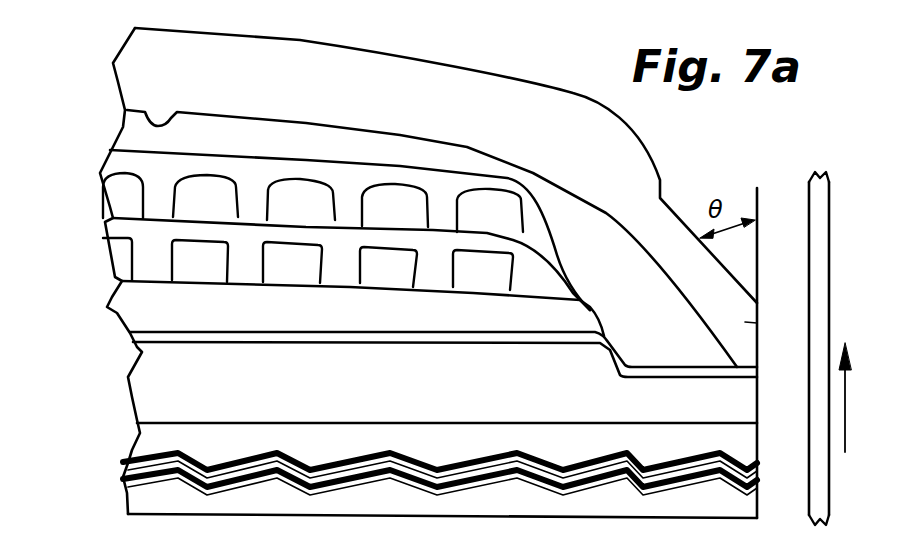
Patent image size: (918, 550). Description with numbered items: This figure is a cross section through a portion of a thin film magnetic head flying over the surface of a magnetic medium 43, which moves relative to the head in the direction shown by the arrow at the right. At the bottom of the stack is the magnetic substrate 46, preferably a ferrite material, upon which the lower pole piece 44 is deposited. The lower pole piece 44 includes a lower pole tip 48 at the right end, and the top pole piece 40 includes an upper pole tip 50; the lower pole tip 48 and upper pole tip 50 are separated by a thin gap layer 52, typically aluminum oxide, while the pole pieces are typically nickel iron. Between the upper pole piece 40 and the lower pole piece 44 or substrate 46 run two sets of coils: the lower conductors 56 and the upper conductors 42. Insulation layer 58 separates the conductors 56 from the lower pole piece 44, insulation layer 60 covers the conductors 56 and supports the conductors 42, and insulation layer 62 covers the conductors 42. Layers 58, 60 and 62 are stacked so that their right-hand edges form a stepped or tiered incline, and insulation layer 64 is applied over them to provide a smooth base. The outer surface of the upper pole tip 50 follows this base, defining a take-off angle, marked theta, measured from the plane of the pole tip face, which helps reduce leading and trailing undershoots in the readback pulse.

The top pole piece 40 is at (137, 77).
The coils 42 is at (293, 187).
The magnetic medium 43 is at (808, 195).
The lower pole piece 44 is at (150, 388).
The magnetic substrate 46 is at (137, 492).
The lower pole tip 48 is at (740, 407).
The upper pole tip 50 is at (757, 323).
The gap layer 52 is at (735, 378).
The coils 56 is at (285, 273).
The insulation layer 58 is at (122, 307).
The insulation layer 60 is at (112, 222).
The insulation layer 62 is at (110, 167).
The insulation layer 64 is at (132, 140).